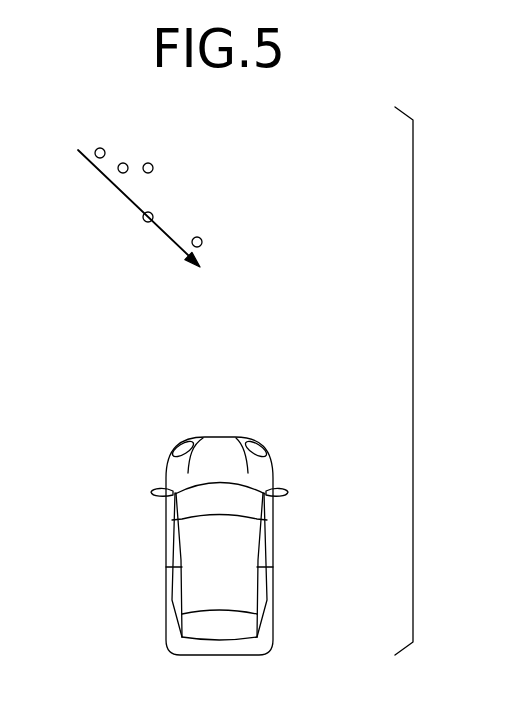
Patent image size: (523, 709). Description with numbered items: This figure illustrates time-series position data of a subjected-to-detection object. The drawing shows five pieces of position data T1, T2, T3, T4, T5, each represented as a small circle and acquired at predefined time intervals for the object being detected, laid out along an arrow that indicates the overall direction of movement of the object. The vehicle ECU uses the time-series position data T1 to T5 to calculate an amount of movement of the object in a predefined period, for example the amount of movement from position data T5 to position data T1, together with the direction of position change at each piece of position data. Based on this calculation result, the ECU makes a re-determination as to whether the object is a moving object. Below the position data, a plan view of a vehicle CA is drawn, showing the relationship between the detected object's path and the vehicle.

The time-series position data T1 is at (98, 148).
The time-series position data T2 is at (125, 163).
The time-series position data T3 is at (153, 168).
The time-series position data T4 is at (143, 219).
The time-series position data T5 is at (200, 237).
The vehicle (camera vehicle) CA is at (273, 627).